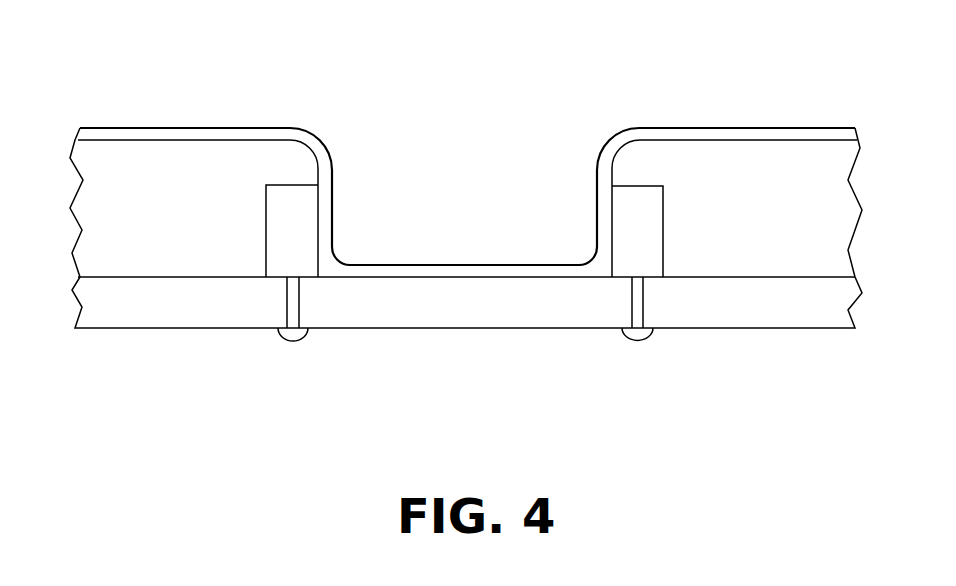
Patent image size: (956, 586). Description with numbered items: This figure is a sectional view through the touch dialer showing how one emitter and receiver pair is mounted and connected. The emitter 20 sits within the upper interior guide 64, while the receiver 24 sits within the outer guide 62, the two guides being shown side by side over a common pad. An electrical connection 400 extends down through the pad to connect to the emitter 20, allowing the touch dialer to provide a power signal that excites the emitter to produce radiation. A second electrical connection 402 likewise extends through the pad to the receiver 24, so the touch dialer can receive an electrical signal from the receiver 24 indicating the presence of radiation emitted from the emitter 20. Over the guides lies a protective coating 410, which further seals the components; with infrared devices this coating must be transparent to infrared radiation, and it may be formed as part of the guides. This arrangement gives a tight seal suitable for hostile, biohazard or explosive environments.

The emitter 20 is at (305, 210).
The receiver 24 is at (635, 198).
The outer guide 62 is at (778, 160).
The upper interior guide 64 is at (170, 157).
The electrical connection 400 is at (296, 298).
The electrical connection 402 is at (642, 338).
The protective coating 410 is at (133, 133).